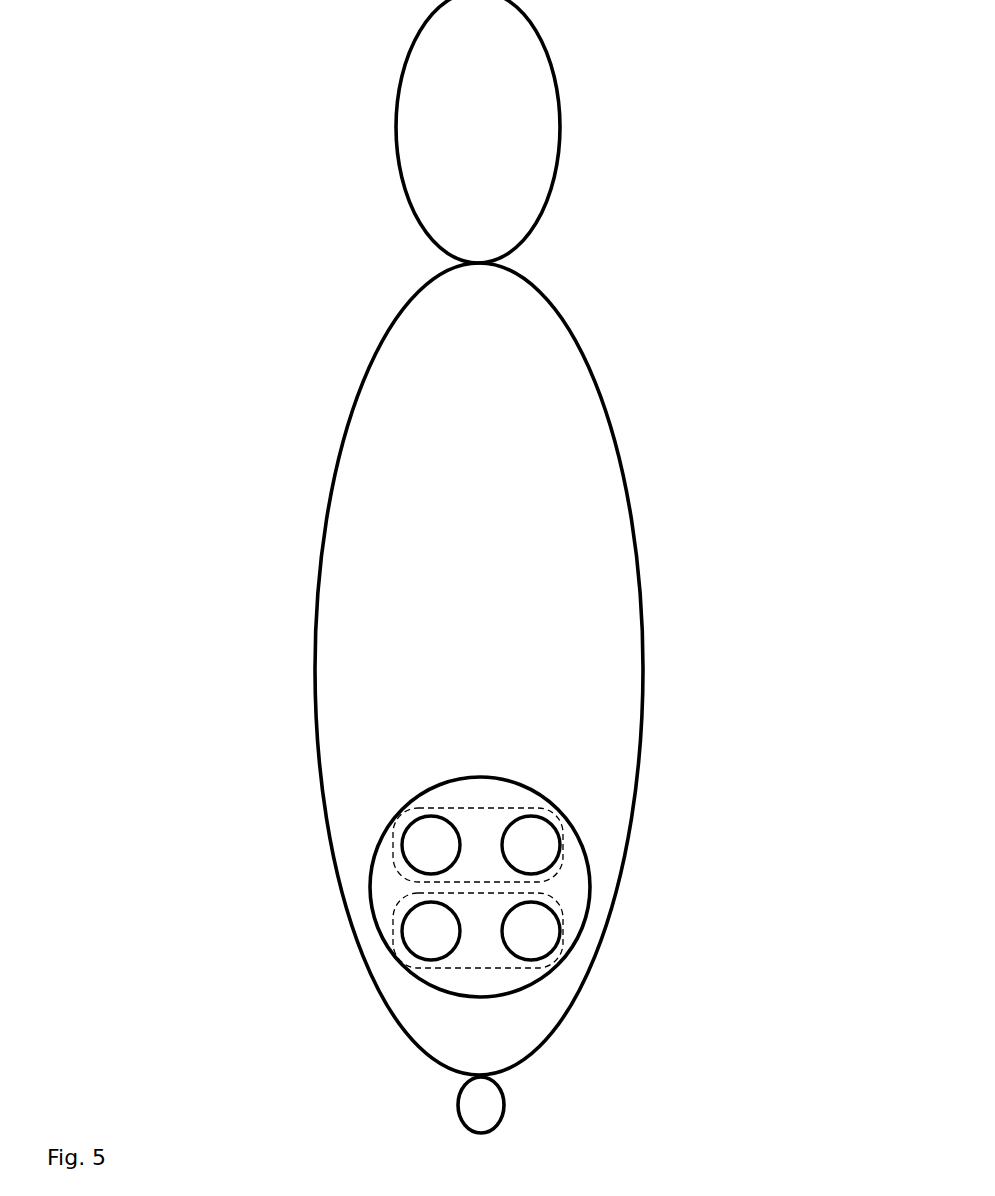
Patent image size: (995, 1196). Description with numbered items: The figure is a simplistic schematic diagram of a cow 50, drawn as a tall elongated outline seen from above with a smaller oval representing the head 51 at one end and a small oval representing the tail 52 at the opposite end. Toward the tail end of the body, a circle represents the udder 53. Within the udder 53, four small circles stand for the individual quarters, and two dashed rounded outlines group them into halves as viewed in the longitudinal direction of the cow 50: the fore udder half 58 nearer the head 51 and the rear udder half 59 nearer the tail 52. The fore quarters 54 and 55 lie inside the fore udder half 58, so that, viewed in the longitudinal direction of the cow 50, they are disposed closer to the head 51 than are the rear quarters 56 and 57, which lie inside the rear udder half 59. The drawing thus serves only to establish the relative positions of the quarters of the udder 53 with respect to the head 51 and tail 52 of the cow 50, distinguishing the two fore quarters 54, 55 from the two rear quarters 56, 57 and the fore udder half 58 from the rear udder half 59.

The cow 50 is at (563, 457).
The head 51 is at (532, 113).
The tail 52 is at (483, 1108).
The udder 53 is at (592, 805).
The fore quarter 54 is at (425, 840).
The fore quarter 55 is at (535, 837).
The rear quarter 56 is at (422, 933).
The rear quarter 57 is at (535, 940).
The fore udder half 58 is at (390, 868).
The rear udder half 59 is at (387, 922).